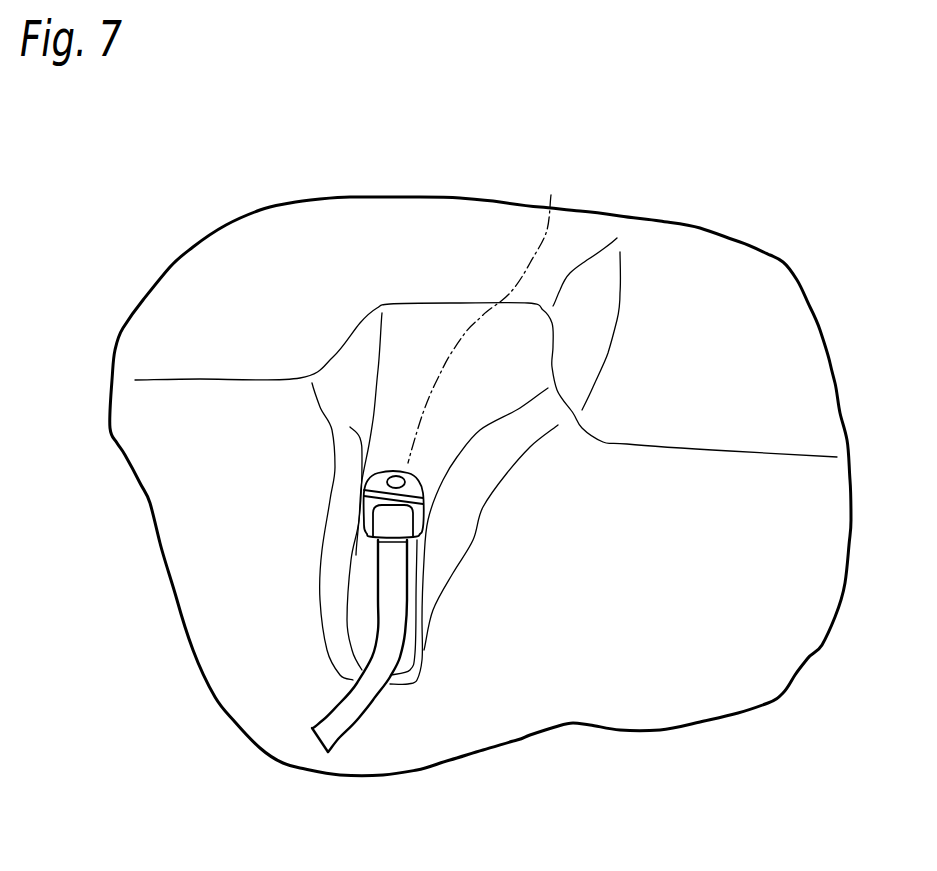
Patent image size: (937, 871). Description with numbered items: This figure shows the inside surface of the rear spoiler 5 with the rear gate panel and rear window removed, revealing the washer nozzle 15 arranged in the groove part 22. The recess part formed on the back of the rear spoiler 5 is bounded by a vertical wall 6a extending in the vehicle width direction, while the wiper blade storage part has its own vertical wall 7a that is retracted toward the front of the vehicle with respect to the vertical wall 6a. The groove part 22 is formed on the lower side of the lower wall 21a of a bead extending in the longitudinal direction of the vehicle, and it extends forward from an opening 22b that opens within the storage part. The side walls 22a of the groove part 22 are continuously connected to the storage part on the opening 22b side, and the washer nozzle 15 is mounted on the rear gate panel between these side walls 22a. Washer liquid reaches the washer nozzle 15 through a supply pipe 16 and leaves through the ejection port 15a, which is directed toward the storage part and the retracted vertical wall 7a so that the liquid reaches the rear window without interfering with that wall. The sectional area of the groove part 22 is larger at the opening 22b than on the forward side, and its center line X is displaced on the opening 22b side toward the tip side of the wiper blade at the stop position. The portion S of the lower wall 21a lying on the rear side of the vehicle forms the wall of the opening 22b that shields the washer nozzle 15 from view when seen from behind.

The rear spoiler 5 is at (514, 188).
The vertical wall of the recess part 6a is at (266, 325).
The vertical wall of the storage part 7a is at (688, 383).
The washer nozzle 15 is at (420, 472).
The ejection port 15a is at (395, 470).
The supply pipe 16 is at (357, 708).
The lower wall of the bead 21a is at (482, 333).
The groove part 22 is at (406, 345).
The side walls of the groove part 22a is at (358, 457).
The opening of the groove part 22b is at (402, 297).
The portion of the lower wall of the bead S is at (465, 285).
The center line of the groove part X is at (485, 315).